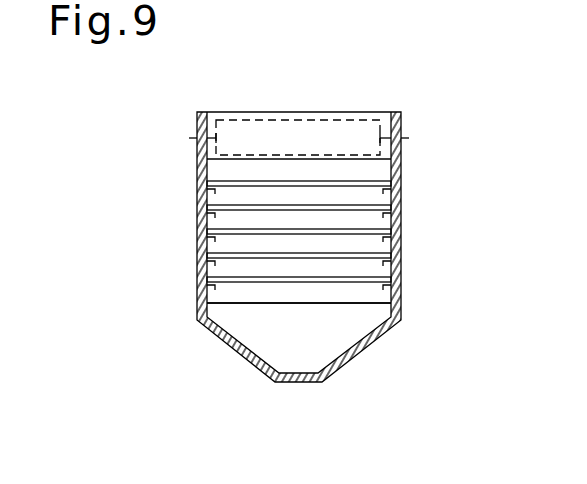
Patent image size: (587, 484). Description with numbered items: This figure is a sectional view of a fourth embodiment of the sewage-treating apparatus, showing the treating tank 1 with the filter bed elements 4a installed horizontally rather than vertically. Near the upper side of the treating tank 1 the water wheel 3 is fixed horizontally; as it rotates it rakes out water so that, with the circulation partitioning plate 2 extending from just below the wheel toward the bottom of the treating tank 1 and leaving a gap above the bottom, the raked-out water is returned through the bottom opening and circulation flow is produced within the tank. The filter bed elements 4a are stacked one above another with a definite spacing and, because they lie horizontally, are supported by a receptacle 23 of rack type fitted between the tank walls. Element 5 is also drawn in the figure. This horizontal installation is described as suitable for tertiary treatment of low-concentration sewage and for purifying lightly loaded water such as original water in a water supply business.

The treating tank 1 is at (397, 308).
The circulation partitioning plate 2 is at (378, 171).
The water wheel 3 is at (313, 116).
The filter bed elements 4a is at (246, 282).
The receptacle of rack type 23 is at (392, 215).
The bottom plate 5 is at (353, 283).